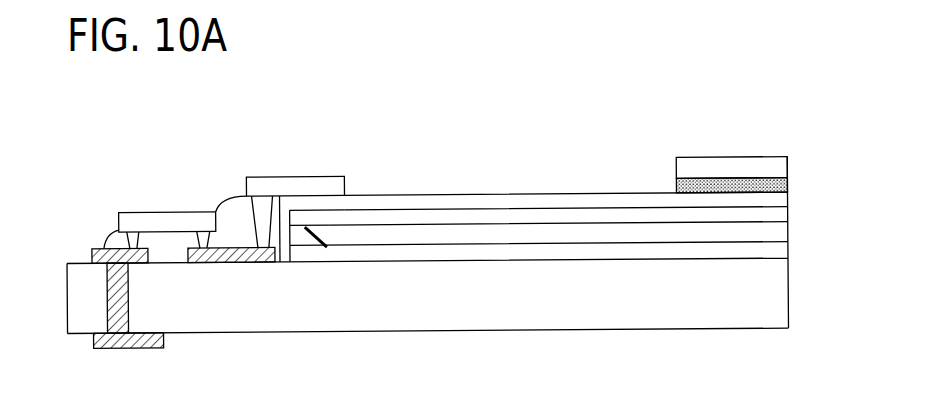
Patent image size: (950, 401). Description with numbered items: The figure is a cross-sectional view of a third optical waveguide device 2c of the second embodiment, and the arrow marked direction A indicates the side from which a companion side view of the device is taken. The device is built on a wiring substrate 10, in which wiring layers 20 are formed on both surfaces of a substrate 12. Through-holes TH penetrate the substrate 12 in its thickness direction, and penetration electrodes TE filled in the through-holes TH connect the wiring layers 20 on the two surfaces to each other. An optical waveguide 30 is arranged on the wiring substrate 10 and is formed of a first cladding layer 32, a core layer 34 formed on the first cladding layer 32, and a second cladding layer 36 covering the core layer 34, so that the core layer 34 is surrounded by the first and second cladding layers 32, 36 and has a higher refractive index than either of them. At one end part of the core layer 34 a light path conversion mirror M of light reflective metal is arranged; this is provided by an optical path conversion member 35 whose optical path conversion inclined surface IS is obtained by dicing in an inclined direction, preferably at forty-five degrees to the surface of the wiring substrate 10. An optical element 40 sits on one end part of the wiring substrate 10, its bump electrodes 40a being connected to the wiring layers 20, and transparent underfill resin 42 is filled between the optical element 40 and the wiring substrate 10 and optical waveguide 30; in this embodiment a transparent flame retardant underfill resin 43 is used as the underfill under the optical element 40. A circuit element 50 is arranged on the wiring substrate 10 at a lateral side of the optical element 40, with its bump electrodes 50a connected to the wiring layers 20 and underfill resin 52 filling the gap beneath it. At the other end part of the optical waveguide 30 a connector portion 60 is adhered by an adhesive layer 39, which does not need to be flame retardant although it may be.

The third optical waveguide device 2c is at (448, 72).
The wiring substrate 10 is at (449, 267).
The substrate 12 is at (745, 321).
The wiring layer 20 is at (92, 245).
The through-hole TH is at (110, 281).
The penetration electrode TE is at (118, 315).
The optical waveguide 30 is at (583, 233).
The first cladding layer 32 is at (785, 256).
The core layer 34 is at (785, 235).
The second cladding layer 36 is at (785, 216).
The optical path conversion member 35 is at (320, 272).
The light path conversion mirror M is at (343, 196).
The optical path conversion inclined surface IS is at (313, 237).
The adhesive layer 39 is at (788, 188).
The optical element 40 is at (290, 182).
The bump electrode 40a is at (260, 202).
The transparent underfill resin 42 is at (312, 202).
The transparent flame retardant underfill resin 43 is at (406, 203).
The circuit element 50 is at (155, 216).
The bump electrode 50a is at (133, 236).
The underfill resin 52 is at (170, 236).
The connector portion 60 is at (720, 169).
The direction A is at (850, 269).